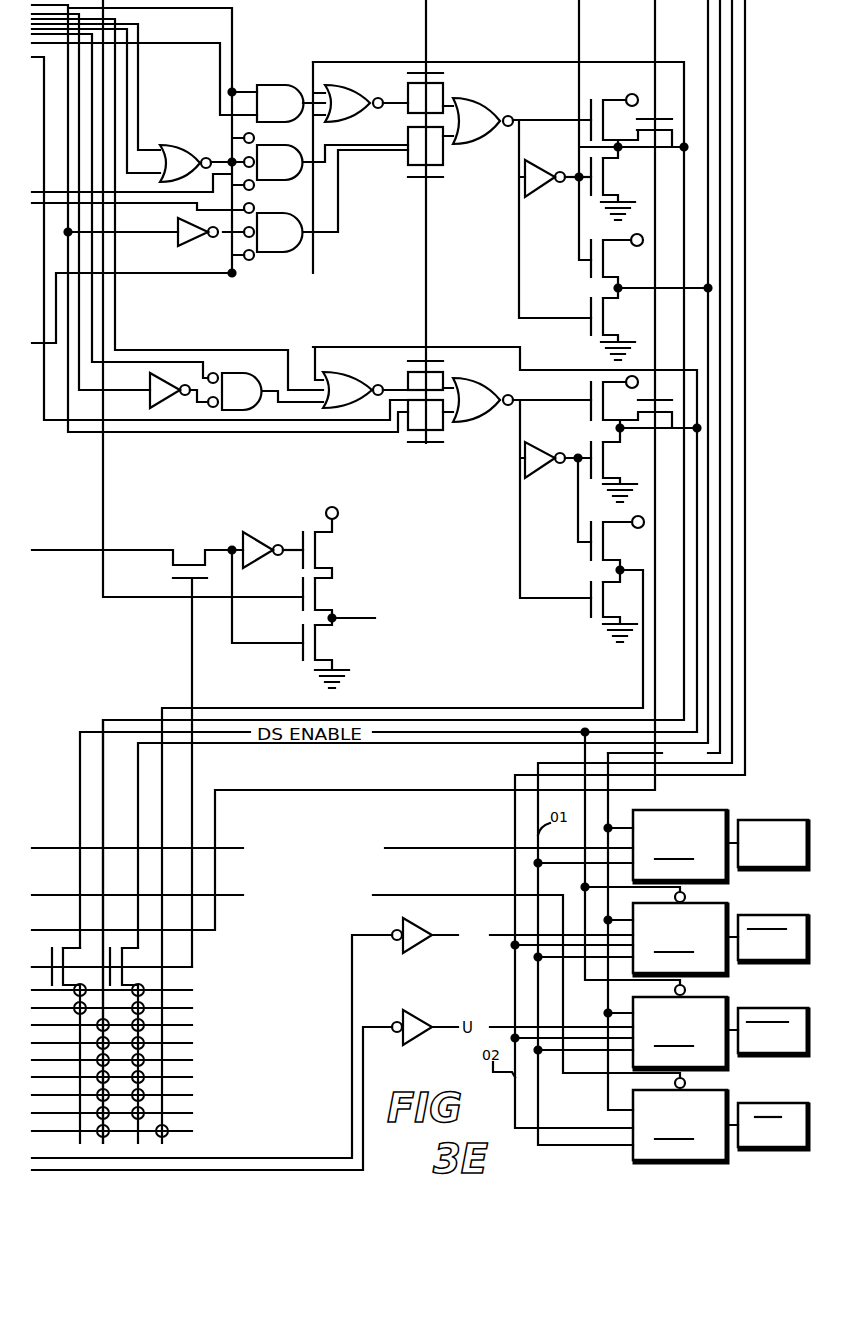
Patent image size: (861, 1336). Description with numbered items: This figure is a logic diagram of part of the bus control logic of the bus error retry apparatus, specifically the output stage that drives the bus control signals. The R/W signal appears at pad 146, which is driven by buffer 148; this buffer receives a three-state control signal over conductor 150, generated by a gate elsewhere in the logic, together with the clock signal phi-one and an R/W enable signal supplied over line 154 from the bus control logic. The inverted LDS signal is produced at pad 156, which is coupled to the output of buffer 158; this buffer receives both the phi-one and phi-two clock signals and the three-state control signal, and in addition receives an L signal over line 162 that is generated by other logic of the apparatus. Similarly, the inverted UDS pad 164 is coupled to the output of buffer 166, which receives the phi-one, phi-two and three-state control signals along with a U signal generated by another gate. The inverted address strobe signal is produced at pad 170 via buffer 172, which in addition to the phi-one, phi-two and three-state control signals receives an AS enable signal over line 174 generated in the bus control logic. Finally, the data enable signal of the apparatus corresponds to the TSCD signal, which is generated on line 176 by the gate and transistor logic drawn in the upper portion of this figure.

The pad 146 is at (757, 820).
The buffer 148 is at (680, 846).
The conductor 150 is at (608, 802).
The line 154 is at (487, 845).
The pad 156 is at (792, 913).
The buffer 158 is at (680, 939).
The line 162 is at (447, 942).
The pad 164 is at (793, 1008).
The buffer 166 is at (680, 1033).
The pad 170 is at (793, 1102).
The buffer 172 is at (680, 1126).
The line 174 is at (470, 895).
The line 176 is at (358, 618).